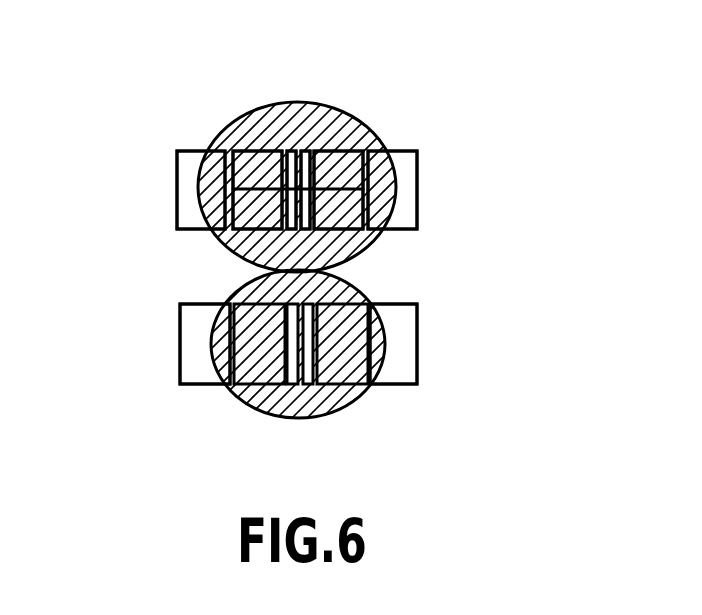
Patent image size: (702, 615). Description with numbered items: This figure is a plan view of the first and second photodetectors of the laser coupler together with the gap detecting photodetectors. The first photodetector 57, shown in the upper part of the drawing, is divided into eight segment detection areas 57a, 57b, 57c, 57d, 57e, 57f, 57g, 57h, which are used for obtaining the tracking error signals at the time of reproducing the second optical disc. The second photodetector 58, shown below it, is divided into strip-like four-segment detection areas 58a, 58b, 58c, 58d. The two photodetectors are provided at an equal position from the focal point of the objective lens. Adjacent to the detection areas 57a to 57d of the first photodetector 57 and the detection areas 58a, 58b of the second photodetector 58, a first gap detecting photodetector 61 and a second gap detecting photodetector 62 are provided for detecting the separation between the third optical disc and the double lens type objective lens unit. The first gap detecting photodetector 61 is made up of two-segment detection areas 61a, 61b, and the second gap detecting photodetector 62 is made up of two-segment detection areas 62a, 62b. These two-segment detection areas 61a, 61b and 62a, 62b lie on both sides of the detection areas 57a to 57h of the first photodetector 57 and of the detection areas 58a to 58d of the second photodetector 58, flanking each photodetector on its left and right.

The first photodetector 57 is at (372, 137).
The segment detection area 57a is at (243, 157).
The segment detection area 57b is at (262, 229).
The segment detection area 57c is at (335, 152).
The segment detection area 57d is at (345, 217).
The segment detection area 57e is at (292, 155).
The segment detection area 57f is at (302, 230).
The segment detection area 57g is at (308, 155).
The segment detection area 57h is at (288, 228).
The first gap detecting photodetector 61 is at (177, 160).
The two-segment detection area 61a is at (187, 203).
The two-segment detection area 61b is at (417, 187).
The second photodetector 58 is at (347, 303).
The strip-like detection area 58a is at (240, 383).
The strip-like detection area 58b is at (357, 387).
The strip-like detection area 58c is at (292, 383).
The strip-like detection area 58d is at (308, 387).
The second gap detecting photodetector 62 is at (193, 332).
The two-segment detection area 62a is at (193, 373).
The two-segment detection area 62b is at (405, 352).